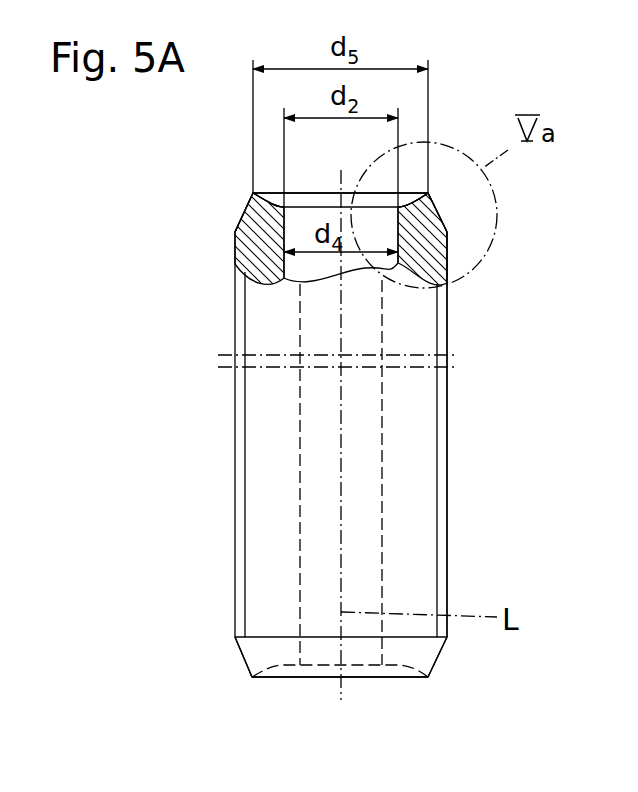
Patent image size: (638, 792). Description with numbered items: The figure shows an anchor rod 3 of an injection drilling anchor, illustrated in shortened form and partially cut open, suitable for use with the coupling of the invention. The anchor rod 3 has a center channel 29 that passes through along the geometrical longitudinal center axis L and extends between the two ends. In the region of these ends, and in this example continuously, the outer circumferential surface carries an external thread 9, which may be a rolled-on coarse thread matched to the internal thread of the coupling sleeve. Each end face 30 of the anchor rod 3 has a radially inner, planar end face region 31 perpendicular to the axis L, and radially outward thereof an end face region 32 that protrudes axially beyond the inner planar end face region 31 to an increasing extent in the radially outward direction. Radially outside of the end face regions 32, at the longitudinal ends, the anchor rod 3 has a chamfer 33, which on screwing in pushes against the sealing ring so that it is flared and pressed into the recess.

The anchor rod 3 is at (217, 440).
The external thread 9 is at (442, 543).
The center channel 29 is at (363, 570).
The end face 30 is at (317, 196).
The inner planar end face region 31 is at (366, 195).
The outer end face region 32 is at (428, 193).
The chamfer 33 is at (438, 217).